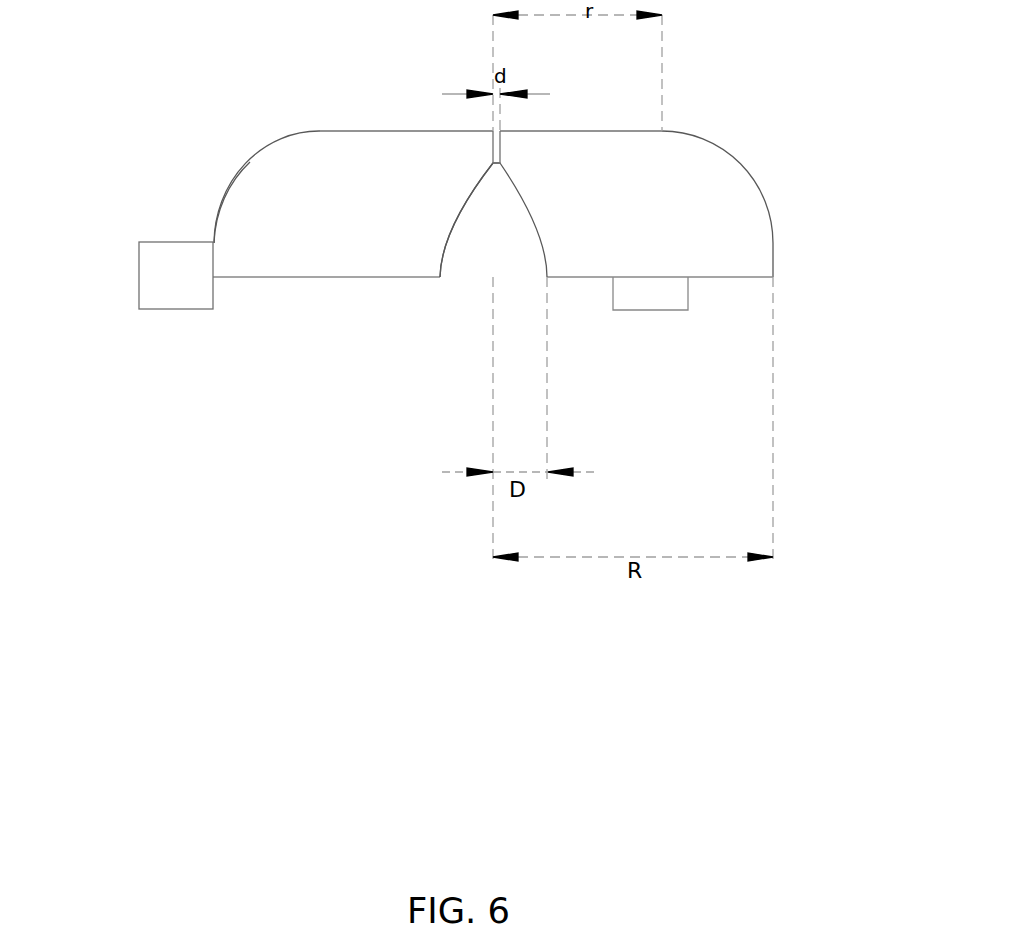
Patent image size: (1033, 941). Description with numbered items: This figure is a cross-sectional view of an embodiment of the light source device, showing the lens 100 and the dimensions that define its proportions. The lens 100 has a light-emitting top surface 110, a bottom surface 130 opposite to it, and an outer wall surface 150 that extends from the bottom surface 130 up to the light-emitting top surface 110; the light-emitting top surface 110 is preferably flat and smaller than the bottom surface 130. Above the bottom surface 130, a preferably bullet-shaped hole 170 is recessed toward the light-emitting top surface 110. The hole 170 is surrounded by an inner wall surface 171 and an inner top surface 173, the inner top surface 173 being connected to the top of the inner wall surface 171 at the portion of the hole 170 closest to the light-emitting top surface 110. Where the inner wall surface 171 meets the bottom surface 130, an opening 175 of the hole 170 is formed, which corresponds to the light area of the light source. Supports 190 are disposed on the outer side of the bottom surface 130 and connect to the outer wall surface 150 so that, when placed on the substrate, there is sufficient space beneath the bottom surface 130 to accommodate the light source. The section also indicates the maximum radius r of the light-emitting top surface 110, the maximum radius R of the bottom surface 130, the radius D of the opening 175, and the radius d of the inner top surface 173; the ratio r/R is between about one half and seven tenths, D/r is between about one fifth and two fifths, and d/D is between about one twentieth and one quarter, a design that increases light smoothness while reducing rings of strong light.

The lens 100 is at (267, 183).
The light-emitting top surface 110 is at (368, 131).
The bottom surface 130 is at (277, 278).
The outer wall surface 150 is at (225, 197).
The hole 170 is at (457, 242).
The inner wall surface 171 is at (453, 220).
The inner top surface 173 is at (492, 160).
The opening 175 is at (482, 290).
The supports 190 is at (152, 272).